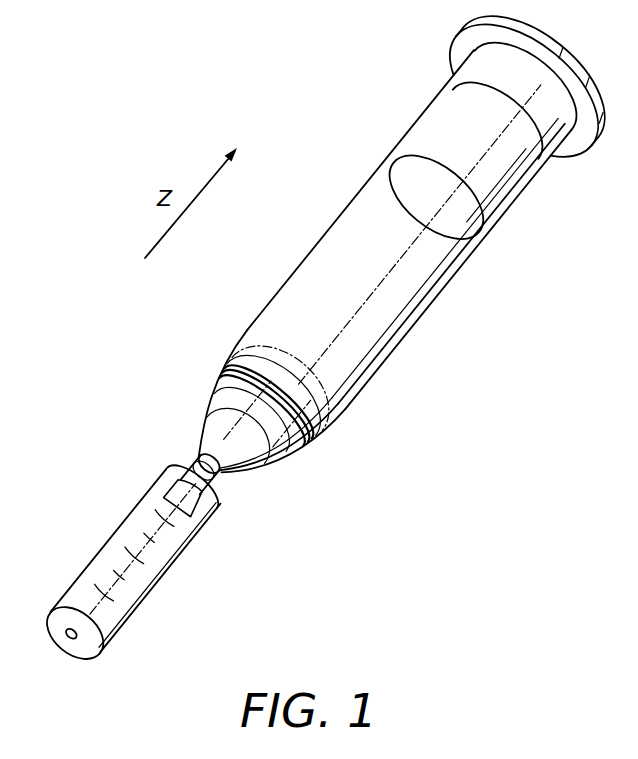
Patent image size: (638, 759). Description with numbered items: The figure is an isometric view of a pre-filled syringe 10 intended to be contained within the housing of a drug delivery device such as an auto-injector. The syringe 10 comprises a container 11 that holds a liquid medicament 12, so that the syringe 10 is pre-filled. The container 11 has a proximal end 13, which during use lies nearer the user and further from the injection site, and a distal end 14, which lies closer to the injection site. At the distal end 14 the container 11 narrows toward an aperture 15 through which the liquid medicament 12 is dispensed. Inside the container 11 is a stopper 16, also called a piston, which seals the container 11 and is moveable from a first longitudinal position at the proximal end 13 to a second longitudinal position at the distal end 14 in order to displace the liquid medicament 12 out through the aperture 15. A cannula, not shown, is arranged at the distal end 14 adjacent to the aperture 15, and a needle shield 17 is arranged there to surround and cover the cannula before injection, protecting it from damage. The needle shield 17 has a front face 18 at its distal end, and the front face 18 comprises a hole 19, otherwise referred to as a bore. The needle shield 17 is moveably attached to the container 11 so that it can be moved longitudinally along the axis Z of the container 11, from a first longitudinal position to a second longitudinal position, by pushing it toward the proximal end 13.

The syringe 10 is at (350, 78).
The container 11 is at (315, 250).
The liquid medicament 12 is at (273, 318).
The proximal end 13 is at (540, 170).
The distal end 14 is at (268, 452).
The aperture 15 is at (203, 466).
The stopper 16 is at (442, 118).
The needle shield 17 is at (96, 558).
The front face 18 is at (55, 632).
The hole 19 is at (68, 641).